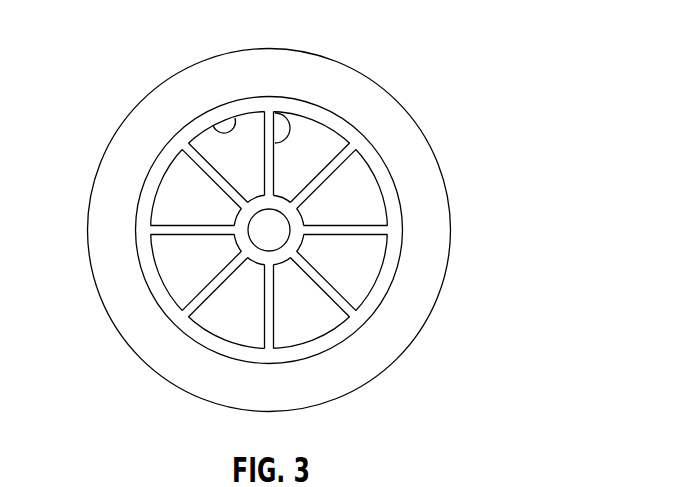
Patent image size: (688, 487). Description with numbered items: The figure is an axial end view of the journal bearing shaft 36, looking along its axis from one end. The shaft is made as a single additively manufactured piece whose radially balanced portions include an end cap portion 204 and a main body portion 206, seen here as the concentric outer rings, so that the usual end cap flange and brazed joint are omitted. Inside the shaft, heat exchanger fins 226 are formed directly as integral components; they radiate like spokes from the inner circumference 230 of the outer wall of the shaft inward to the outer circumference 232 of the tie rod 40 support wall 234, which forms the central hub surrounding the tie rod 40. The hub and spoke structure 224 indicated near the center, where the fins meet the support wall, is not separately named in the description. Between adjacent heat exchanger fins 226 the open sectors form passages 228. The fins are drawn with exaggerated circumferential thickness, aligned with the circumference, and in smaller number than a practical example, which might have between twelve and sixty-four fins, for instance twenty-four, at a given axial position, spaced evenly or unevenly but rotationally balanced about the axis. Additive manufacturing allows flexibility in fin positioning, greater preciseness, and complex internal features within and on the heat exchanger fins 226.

The journal bearing shaft 36 is at (289, 218).
The tie rod 40 is at (270, 232).
The end cap portion 204 is at (393, 97).
The main body portion 206 is at (177, 133).
The spokes 224 is at (237, 222).
The heat exchanger fins 226 is at (287, 125).
The passages 228 is at (368, 250).
The inner circumference of outer wall 230 is at (234, 122).
The outer circumference of tie rod support wall 232 is at (233, 245).
The tie rod support wall 234 is at (253, 253).